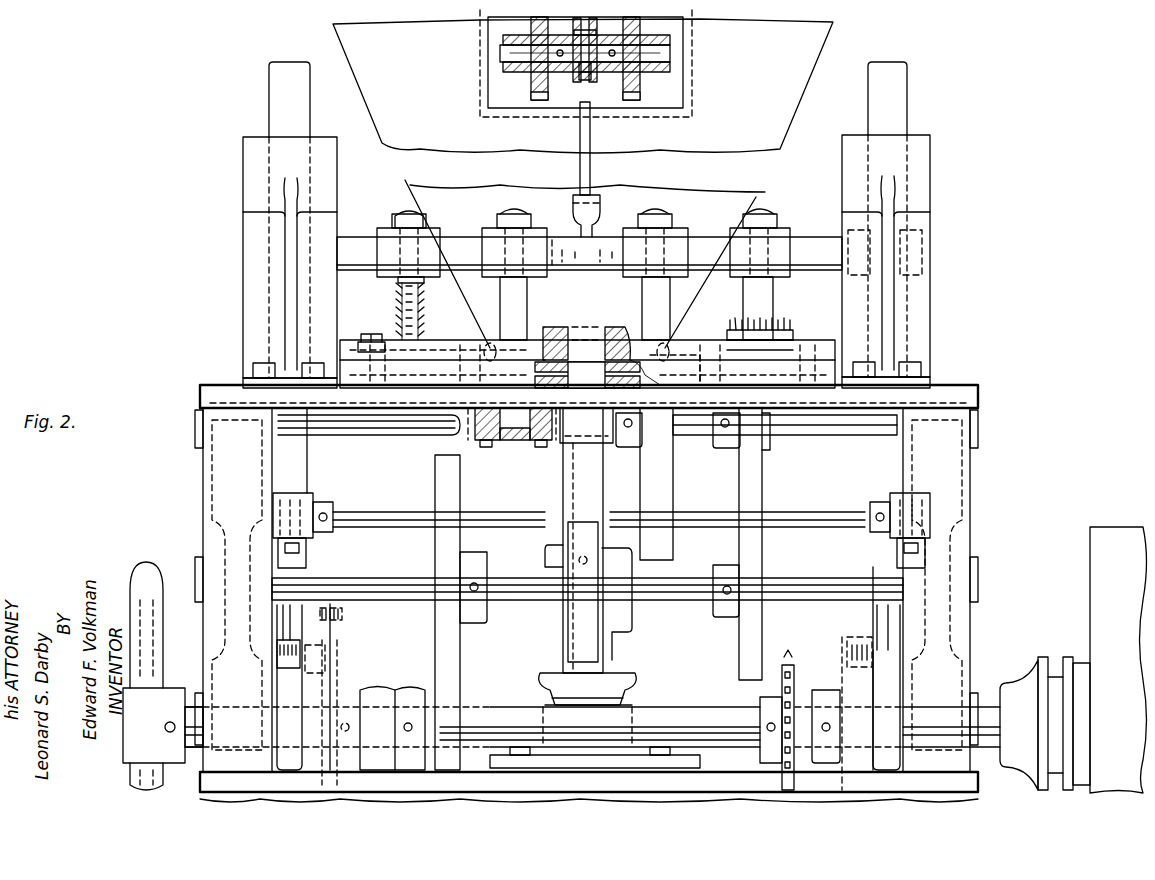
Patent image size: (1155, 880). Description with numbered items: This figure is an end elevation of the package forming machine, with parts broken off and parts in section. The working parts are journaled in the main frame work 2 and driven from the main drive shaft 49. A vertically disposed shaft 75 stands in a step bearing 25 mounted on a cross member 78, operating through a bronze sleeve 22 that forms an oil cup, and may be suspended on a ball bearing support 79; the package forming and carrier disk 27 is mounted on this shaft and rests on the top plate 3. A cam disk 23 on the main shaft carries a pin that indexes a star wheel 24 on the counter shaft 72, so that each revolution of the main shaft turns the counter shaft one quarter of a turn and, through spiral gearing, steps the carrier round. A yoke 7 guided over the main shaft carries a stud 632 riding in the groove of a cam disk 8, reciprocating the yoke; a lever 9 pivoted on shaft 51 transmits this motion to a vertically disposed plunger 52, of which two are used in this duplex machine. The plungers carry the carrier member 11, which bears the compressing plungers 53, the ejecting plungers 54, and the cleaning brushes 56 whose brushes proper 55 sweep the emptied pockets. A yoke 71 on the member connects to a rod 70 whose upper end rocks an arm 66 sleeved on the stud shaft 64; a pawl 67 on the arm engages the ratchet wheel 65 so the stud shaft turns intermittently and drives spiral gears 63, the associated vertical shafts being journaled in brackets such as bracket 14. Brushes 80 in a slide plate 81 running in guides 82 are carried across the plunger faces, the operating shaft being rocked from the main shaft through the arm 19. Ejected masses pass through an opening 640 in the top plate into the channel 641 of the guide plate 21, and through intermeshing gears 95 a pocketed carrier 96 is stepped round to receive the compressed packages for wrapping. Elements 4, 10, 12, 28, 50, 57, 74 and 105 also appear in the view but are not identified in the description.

The main frame work 2 is at (204, 488).
The top plate 3 is at (400, 410).
The bolt 4 is at (360, 344).
The yoke 7 is at (309, 568).
The cam disk 8 is at (348, 650).
The lever 9 is at (318, 496).
The cylinder 10 is at (330, 297).
The carrier member 11 is at (556, 236).
The plate 12 is at (685, 378).
The bracket 14 is at (686, 58).
The arm 19 is at (383, 685).
The guide plate 21 is at (515, 441).
The bronze sleeve 22 is at (540, 680).
The cam disk 23 is at (434, 653).
The star wheel 24 is at (462, 633).
The step bearing 25 is at (543, 703).
The package forming and carrier disk 27 is at (606, 327).
The table plate 28 is at (487, 384).
The main drive shaft 49 is at (490, 707).
The fly wheel 50 is at (1090, 611).
The shaft 51 is at (403, 512).
The vertically disposed plunger 52 is at (268, 104).
The compressing plunger 53 is at (774, 300).
The ejecting plunger 54 is at (527, 302).
The brushes 55 is at (422, 322).
The cleaning brushes 56 is at (420, 283).
The hopper 57 is at (797, 105).
The spiral gear 63 is at (531, 96).
The stud shaft 64 is at (500, 48).
The ratchet wheel 65 is at (585, 82).
The arm 66 is at (597, 24).
The pawl 67 is at (574, 22).
The rod 70 is at (580, 168).
The yoke 71 is at (606, 222).
The counter shaft 72 is at (546, 604).
The slide 74 is at (588, 592).
The vertically disposed shaft 75 is at (563, 488).
The cross member 78 is at (668, 763).
The ball bearing support 79 is at (626, 380).
The brushes 80 is at (793, 322).
The slide plate 81 is at (727, 340).
The guides 82 is at (727, 350).
The intermeshing gears 95 is at (762, 547).
The carrier 96 is at (672, 488).
The rack bar 105 is at (796, 678).
The stud or pin 632 is at (290, 658).
The opening 640 is at (480, 450).
The channel 641 is at (545, 450).